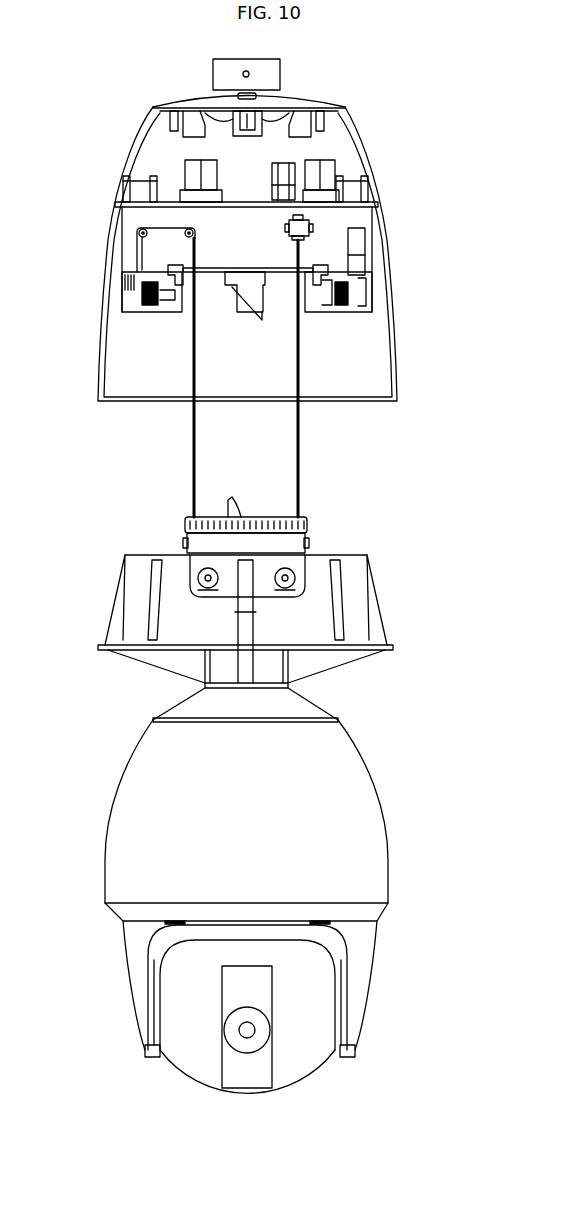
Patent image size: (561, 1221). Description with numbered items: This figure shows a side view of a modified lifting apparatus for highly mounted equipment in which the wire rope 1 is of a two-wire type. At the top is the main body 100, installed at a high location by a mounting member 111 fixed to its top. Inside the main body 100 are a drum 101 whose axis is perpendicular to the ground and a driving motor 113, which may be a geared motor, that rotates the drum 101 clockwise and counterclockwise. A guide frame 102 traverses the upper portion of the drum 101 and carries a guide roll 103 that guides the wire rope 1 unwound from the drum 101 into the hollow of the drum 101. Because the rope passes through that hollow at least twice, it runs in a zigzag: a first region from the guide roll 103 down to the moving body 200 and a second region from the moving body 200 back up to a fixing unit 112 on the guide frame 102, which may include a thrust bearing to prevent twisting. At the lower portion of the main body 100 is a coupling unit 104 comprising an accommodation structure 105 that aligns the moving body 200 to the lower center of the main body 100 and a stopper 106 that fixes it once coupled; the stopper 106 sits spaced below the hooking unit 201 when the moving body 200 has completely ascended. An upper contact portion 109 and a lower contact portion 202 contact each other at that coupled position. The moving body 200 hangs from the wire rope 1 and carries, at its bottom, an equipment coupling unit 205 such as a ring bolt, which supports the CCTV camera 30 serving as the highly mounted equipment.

The wire rope 1 is at (300, 425).
The CCTV camera 30 is at (400, 800).
The main body 100 is at (408, 151).
The drum 101 is at (140, 283).
The guide frame 102 is at (180, 216).
The guide roll 103 is at (196, 233).
The coupling unit 104 is at (401, 302).
The accommodation structure 105 is at (355, 312).
The stopper 106 is at (352, 297).
The upper contact portion 109 is at (212, 283).
The mounting member 111 is at (282, 73).
The fixing unit 112 is at (324, 224).
The driving motor 113 is at (357, 240).
The moving body 200 is at (281, 613).
The hooking unit 201 is at (326, 517).
The lower contact portion 202 is at (267, 509).
The equipment coupling unit 205 is at (300, 665).